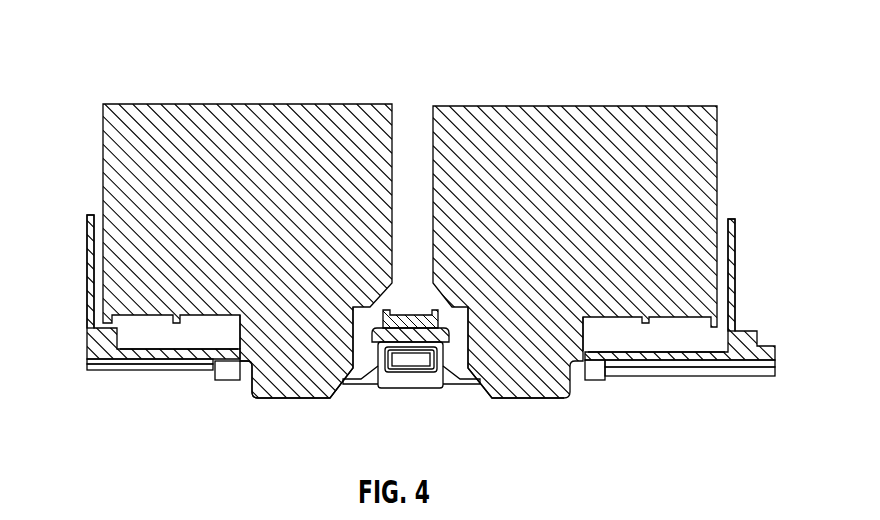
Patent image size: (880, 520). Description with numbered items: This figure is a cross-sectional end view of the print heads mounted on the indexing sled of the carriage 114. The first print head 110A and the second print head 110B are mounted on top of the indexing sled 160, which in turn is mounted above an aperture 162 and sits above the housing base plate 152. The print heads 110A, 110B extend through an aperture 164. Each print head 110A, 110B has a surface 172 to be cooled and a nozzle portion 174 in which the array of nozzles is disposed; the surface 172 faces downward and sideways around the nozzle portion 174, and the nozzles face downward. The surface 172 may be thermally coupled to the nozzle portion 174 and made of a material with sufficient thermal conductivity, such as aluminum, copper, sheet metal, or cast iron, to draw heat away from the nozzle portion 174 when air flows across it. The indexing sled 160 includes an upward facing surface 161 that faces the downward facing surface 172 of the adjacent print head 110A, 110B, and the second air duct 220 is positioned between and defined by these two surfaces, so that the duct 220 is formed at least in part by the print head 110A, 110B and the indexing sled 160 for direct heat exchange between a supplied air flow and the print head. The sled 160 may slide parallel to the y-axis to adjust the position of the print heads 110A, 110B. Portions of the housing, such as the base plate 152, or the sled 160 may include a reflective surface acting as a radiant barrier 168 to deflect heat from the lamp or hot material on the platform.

The carriage 114 is at (107, 46).
The first print head 110A is at (178, 117).
The second print head 110B is at (594, 122).
The indexing sled 160 is at (87, 340).
The upward facing surface 161 is at (132, 340).
The surface to be cooled 172 is at (237, 328).
The nozzle portion 174 is at (512, 398).
The second air duct 220 is at (148, 340).
The base plate 152 is at (137, 371).
The radiant barrier 168 is at (90, 371).
The aperture 162 is at (239, 378).
The aperture 164 is at (252, 398).